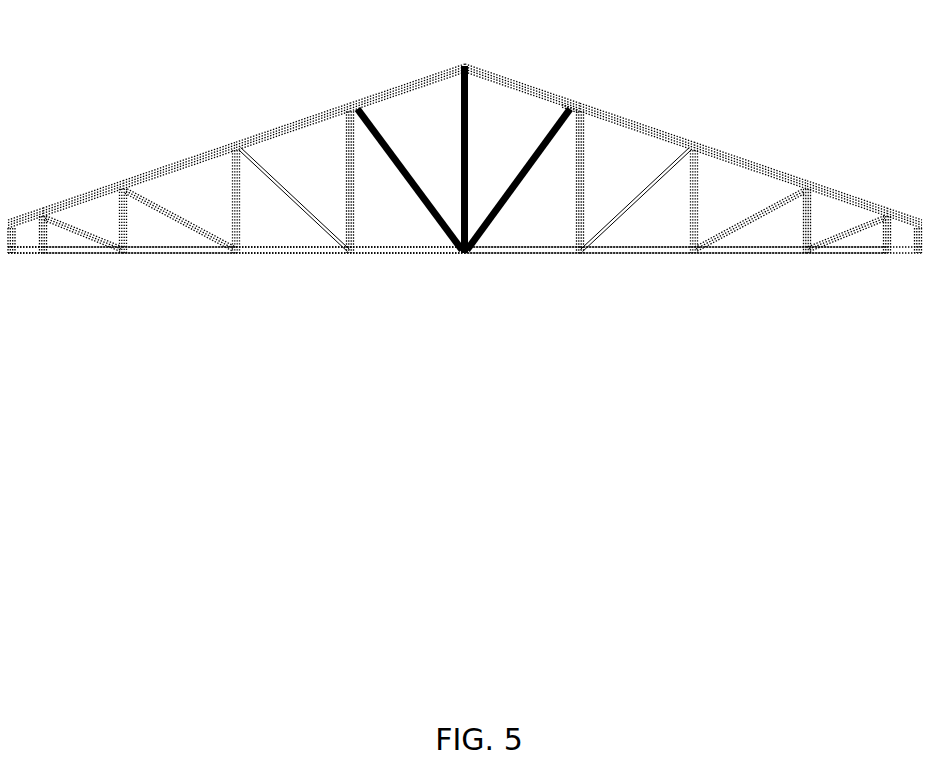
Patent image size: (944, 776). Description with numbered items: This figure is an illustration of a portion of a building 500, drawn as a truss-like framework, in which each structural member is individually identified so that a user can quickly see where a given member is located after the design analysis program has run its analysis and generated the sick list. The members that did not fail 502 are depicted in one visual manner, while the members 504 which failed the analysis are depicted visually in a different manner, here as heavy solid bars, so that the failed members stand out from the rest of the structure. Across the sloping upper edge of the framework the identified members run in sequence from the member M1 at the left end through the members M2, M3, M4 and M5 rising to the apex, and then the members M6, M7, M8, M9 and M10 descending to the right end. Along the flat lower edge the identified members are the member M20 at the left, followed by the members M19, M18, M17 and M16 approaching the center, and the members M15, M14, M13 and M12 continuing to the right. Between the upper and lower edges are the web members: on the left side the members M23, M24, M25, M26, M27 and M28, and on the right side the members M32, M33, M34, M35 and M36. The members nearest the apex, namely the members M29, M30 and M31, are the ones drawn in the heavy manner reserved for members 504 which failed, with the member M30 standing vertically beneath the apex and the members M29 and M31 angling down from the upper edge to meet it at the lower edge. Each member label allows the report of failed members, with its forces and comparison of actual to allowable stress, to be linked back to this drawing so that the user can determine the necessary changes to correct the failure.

The building 500 is at (728, 64).
The members which did not fail 502 is at (570, 105).
The members which failed the analysis 504 is at (461, 117).
The top chord member M1 is at (25, 214).
The top chord member M2 is at (83, 198).
The top chord member M3 is at (179, 165).
The top chord member M4 is at (293, 126).
The top chord member M5 is at (407, 87).
The top chord member M6 is at (522, 87).
The top chord member M7 is at (637, 126).
The top chord member M8 is at (750, 165).
The top chord member M9 is at (847, 198).
The top chord member M10 is at (904, 215).
The bottom chord member M12 is at (847, 261).
The bottom chord member M13 is at (750, 261).
The bottom chord member M14 is at (637, 261).
The bottom chord member M15 is at (522, 261).
The bottom chord member M16 is at (407, 261).
The bottom chord member M17 is at (293, 261).
The bottom chord member M18 is at (179, 261).
The bottom chord member M19 is at (83, 261).
The bottom chord member M20 is at (25, 261).
The web member M23 is at (83, 234).
The web member M24 is at (137, 221).
The web member M25 is at (180, 220).
The web member M26 is at (250, 201).
The web member M27 is at (294, 199).
The web member M28 is at (365, 182).
The web member M29 is at (410, 179).
The web member M30 is at (480, 159).
The web member M31 is at (518, 179).
The web member M32 is at (594, 182).
The web member M33 is at (636, 199).
The web member M34 is at (708, 201).
The web member M35 is at (750, 220).
The web member M36 is at (847, 234).